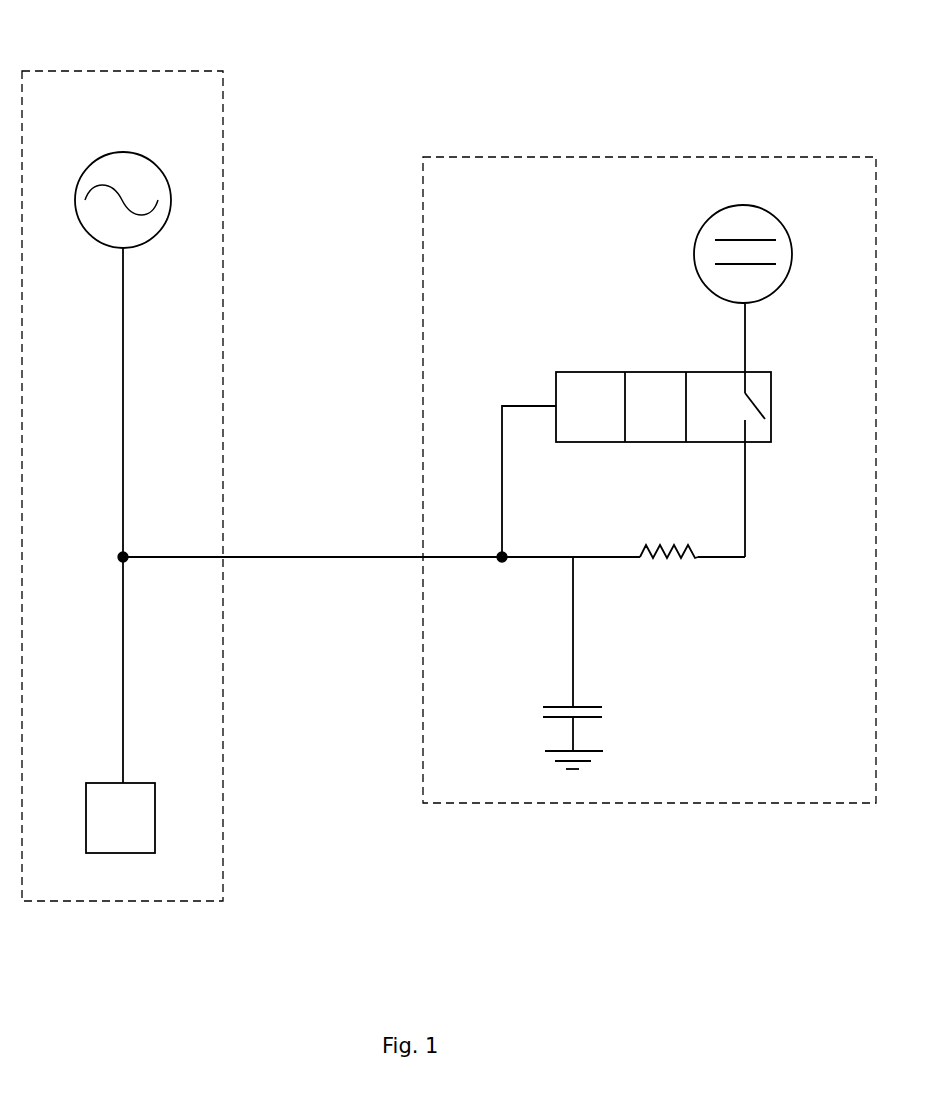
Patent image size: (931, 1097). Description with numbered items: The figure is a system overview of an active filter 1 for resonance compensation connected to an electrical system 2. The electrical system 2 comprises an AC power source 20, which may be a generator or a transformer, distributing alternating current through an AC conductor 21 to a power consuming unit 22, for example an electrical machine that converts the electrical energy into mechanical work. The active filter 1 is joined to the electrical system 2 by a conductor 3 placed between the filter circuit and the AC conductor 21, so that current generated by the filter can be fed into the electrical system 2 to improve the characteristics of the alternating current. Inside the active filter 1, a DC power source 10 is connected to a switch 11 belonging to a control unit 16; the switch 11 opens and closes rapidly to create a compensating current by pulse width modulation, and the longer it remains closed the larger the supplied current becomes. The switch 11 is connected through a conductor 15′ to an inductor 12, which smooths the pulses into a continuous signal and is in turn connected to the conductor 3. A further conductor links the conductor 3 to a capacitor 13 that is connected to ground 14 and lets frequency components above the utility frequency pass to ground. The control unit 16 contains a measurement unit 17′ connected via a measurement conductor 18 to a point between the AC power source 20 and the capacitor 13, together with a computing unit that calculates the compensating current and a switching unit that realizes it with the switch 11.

The active filter 1 is at (713, 157).
The electrical system 2 is at (132, 71).
The conductor 3 is at (280, 557).
The DC power source 10 is at (793, 256).
The switch 11 is at (765, 408).
The inductor 12 is at (640, 548).
The capacitor 13 is at (602, 707).
The ground 14 is at (602, 751).
The conductor 15′ is at (745, 347).
The control unit 16 is at (636, 343).
The measurement unit 17′ is at (585, 405).
The measurement conductor 18 is at (502, 475).
The AC power source 20 is at (110, 155).
The AC conductor 21 is at (123, 423).
The power consuming unit 22 is at (155, 795).